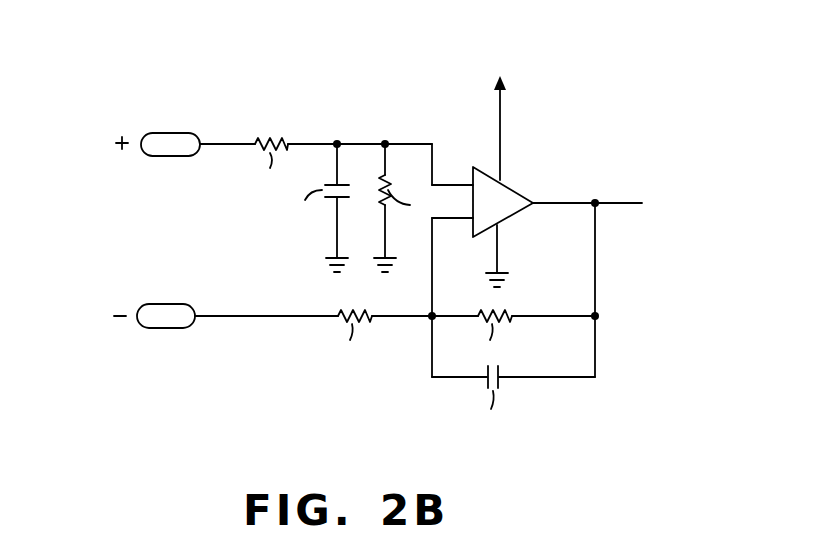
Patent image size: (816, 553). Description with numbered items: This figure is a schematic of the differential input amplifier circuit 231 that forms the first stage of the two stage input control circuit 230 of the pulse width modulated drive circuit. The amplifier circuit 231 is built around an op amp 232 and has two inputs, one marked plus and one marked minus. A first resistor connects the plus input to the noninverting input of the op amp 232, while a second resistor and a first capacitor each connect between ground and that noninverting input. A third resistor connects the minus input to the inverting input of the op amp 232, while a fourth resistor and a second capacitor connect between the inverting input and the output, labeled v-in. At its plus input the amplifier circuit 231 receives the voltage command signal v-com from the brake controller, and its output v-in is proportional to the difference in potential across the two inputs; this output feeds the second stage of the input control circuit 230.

The input control circuit 230 is at (229, 98).
The differential input amplifier circuit 231 is at (384, 115).
The op amp 232 is at (510, 187).